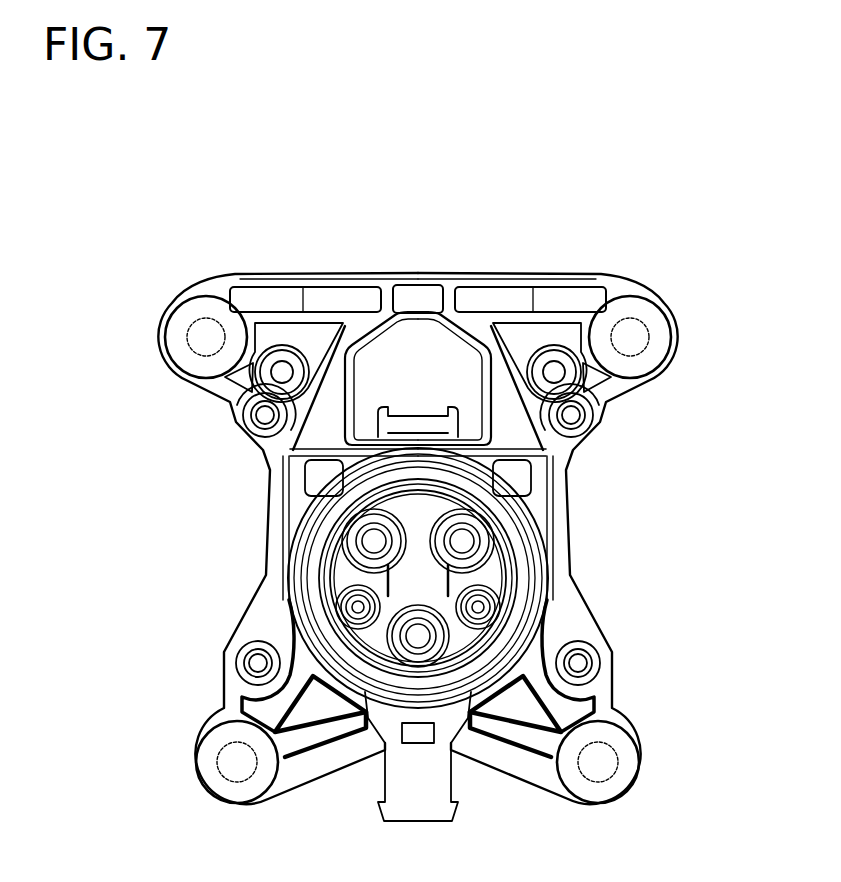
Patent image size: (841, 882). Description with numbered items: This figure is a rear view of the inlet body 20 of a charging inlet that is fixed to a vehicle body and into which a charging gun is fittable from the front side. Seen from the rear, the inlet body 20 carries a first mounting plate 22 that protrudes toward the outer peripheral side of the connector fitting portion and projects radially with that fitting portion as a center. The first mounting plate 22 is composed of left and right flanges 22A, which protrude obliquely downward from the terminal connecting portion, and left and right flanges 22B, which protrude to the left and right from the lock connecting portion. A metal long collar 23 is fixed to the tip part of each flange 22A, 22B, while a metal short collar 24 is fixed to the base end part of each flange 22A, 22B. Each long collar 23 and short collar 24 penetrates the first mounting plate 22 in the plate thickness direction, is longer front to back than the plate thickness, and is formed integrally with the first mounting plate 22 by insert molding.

The inlet body 20 is at (432, 197).
The first mounting plate 22 is at (521, 283).
The flange 22A is at (222, 717).
The flange 22B is at (213, 382).
The long collar 23 is at (183, 322).
The short collar 24 is at (254, 428).